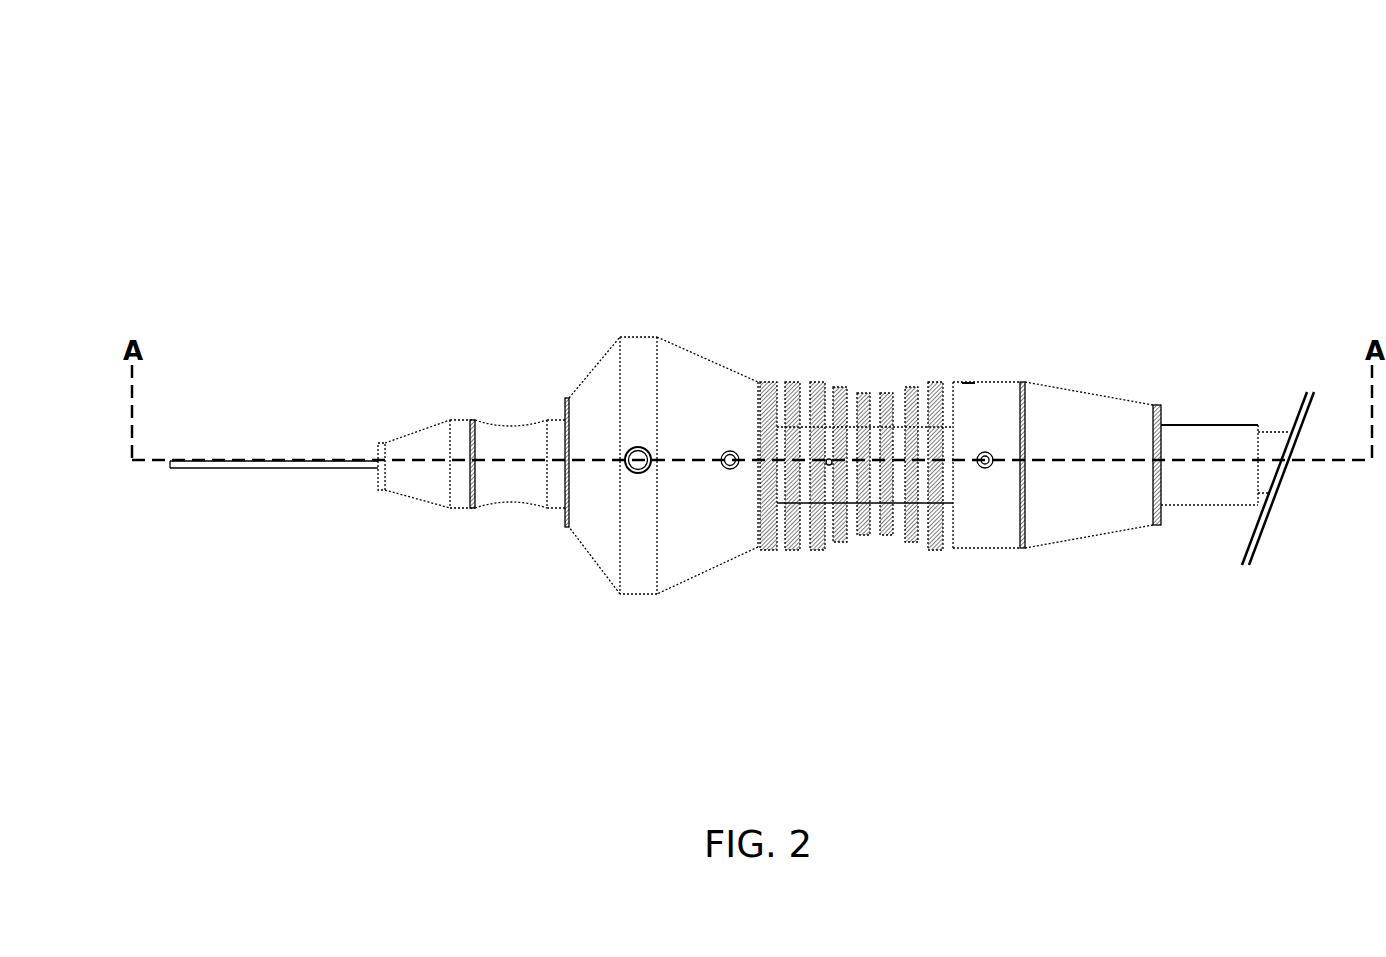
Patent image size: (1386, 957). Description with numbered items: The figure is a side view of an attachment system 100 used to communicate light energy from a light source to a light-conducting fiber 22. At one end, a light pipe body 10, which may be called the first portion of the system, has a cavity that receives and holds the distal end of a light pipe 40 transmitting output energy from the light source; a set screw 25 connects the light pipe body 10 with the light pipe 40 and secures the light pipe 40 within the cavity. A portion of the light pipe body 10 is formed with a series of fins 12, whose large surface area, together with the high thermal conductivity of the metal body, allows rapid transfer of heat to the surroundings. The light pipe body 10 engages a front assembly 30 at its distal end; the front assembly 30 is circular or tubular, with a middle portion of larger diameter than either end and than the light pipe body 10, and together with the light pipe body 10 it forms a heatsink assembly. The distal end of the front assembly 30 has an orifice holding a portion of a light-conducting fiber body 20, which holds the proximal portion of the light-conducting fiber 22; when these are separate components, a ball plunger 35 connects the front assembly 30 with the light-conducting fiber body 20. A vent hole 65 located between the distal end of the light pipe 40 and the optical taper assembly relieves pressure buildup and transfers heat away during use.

The attachment system 100 is at (376, 76).
The light-conducting fiber 22 is at (207, 462).
The light-conducting fiber body 20 is at (477, 438).
The front assembly 30 is at (684, 377).
The ball plunger 35 is at (642, 472).
The fins 12 is at (856, 520).
The vent hole 65 is at (829, 462).
The light pipe body 10 is at (1052, 415).
The set screw 25 is at (988, 470).
The light pipe 40 is at (1238, 438).